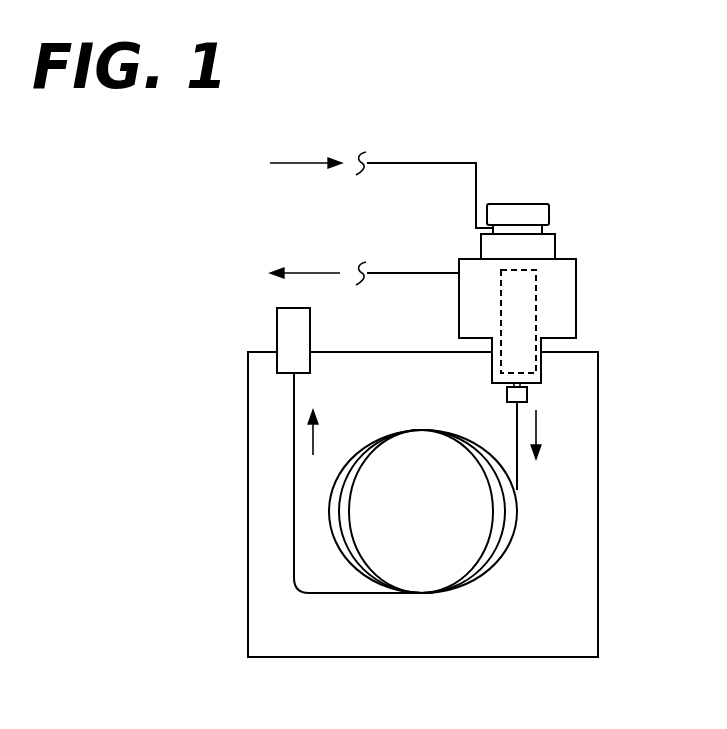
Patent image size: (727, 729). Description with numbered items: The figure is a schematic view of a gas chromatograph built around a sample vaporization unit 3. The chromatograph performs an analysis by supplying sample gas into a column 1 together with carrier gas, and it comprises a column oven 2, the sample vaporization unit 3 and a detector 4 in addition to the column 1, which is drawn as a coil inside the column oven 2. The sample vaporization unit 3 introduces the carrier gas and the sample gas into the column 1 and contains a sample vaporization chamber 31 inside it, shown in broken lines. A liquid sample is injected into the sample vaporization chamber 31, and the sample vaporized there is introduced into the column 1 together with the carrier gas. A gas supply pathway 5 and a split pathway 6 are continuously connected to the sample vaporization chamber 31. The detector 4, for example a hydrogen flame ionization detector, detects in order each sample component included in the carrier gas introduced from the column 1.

The column 1 is at (490, 572).
The column oven 2 is at (248, 555).
The sample vaporization unit 3 is at (576, 312).
The sample vaporization chamber 31 is at (531, 289).
The detector 4 is at (277, 330).
The gas supply pathway 5 is at (408, 163).
The split pathway 6 is at (407, 273).